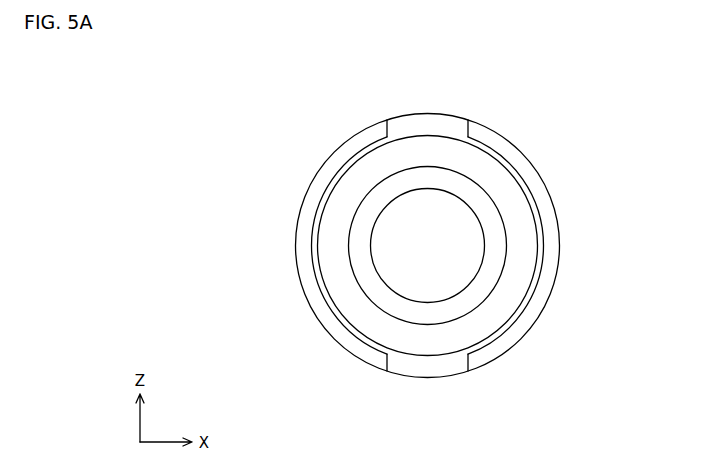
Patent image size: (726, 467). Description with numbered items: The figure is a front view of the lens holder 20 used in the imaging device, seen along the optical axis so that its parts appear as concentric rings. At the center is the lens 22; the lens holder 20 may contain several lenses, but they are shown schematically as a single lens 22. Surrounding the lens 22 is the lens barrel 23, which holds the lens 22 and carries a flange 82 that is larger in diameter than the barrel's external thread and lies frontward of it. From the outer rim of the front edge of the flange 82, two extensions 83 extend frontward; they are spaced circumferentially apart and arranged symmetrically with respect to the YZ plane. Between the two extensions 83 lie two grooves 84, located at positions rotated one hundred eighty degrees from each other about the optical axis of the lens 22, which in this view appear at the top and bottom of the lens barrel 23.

The lens holder 20 is at (425, 249).
The lens 22 is at (447, 238).
The lens barrel 23 is at (535, 348).
The flange 82 is at (343, 295).
The extension 83 is at (552, 222).
The groove 84 is at (427, 124).